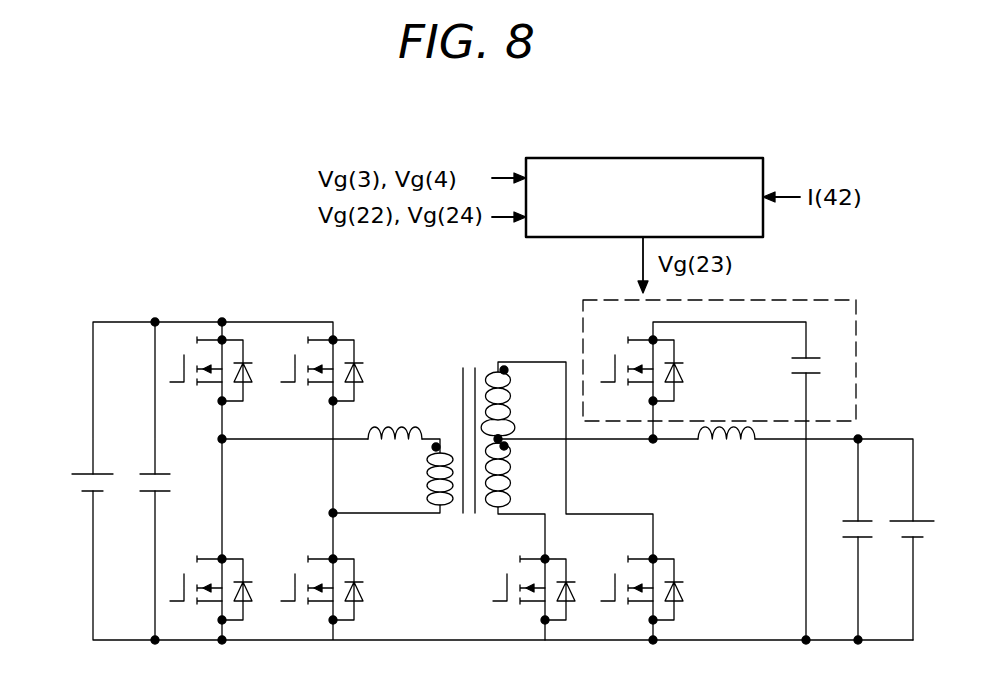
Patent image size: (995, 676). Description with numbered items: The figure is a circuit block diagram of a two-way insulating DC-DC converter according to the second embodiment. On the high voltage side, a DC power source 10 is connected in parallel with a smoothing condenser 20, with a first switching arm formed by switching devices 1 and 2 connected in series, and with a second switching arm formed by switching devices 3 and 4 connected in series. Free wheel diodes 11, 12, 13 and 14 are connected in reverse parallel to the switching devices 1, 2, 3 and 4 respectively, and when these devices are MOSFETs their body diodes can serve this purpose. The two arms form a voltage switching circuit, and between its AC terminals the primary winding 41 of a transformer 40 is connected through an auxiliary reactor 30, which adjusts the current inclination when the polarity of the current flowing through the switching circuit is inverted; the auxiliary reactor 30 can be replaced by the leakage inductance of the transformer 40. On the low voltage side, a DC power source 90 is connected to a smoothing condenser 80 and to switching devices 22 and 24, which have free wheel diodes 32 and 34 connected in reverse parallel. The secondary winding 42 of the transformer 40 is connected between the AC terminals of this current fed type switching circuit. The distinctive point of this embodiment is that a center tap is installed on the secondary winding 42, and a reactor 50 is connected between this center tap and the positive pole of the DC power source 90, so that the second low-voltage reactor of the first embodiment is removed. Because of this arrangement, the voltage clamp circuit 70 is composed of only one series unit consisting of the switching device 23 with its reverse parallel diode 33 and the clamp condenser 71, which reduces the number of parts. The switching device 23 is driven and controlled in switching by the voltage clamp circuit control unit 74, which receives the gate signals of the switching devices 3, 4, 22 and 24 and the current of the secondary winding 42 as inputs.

The switching device 1 is at (212, 353).
The switching device 2 is at (210, 572).
The switching device 3 is at (320, 353).
The switching device 4 is at (318, 572).
The DC power source 10 is at (80, 472).
The free wheel diode 11 is at (250, 387).
The free wheel diode 12 is at (248, 607).
The free wheel diode 13 is at (367, 360).
The free wheel diode 14 is at (363, 575).
The smoothing condenser 20 is at (148, 472).
The switching device 22 is at (535, 572).
The switching device 23 is at (642, 355).
The switching device 24 is at (643, 572).
The auxiliary reactor 30 is at (395, 422).
The free wheel diode 32 is at (573, 607).
The reverse parallel diode 33 is at (683, 362).
The free wheel diode 34 is at (685, 575).
The transformer 40 is at (468, 365).
The primary winding 41 is at (425, 472).
The secondary winding 42 is at (510, 398).
The reactor 50 is at (738, 447).
The voltage clamp circuit 70 is at (793, 295).
The clamp condenser 71 is at (813, 355).
The voltage clamp circuit control unit 74 is at (702, 155).
The smoothing condenser 80 is at (850, 518).
The DC power source 90 is at (902, 518).